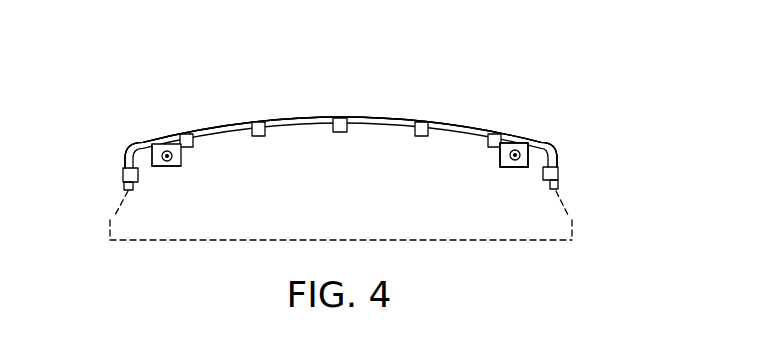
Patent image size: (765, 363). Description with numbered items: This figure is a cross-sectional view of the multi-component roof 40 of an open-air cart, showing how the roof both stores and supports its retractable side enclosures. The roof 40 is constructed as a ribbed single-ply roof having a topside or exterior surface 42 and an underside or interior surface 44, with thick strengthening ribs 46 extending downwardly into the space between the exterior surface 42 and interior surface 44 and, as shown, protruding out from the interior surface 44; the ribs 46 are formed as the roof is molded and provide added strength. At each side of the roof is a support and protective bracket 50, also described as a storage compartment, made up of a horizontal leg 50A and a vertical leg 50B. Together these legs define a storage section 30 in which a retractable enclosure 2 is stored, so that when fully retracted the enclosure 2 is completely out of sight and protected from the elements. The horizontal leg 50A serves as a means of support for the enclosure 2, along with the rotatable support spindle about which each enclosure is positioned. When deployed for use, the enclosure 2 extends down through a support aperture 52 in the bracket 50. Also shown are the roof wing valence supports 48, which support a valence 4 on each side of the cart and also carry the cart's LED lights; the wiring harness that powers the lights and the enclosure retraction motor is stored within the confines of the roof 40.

The retractable enclosure 2 is at (157, 142).
The valence 4 is at (110, 232).
The storage section 30 is at (176, 148).
The multi-component roof 40 is at (462, 78).
The multi-component roof topside 42 is at (295, 118).
The underside of multi-component roof 44 is at (378, 128).
The multi-component strengthening roof rib 46 is at (258, 124).
The multi-component roof wing valence support 48 is at (123, 173).
The support and protective bracket 50 is at (508, 168).
The horizontal leg of support and protective bracket 50A is at (173, 168).
The vertical leg of support and protective bracket 50B is at (152, 155).
The support aperture 52 is at (158, 168).